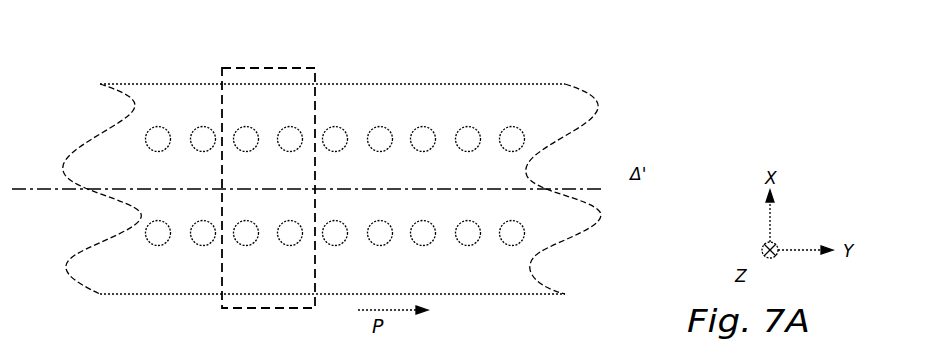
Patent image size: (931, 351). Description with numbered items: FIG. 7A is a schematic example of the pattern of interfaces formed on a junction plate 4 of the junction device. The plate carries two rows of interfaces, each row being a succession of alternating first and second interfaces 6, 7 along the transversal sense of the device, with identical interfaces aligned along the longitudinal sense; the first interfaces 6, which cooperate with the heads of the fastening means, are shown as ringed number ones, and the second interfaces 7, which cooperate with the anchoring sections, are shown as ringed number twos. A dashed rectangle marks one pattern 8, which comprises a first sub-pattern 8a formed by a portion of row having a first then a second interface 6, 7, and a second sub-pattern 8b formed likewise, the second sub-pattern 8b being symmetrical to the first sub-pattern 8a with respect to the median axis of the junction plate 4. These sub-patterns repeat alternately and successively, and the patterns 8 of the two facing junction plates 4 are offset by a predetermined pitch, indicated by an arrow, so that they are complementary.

The junction plate 4 is at (93, 156).
The first interface 6 is at (425, 128).
The second interface 7 is at (460, 128).
The pattern 8 is at (243, 68).
The first sub-pattern 8a is at (298, 110).
The second sub-pattern 8b is at (273, 282).